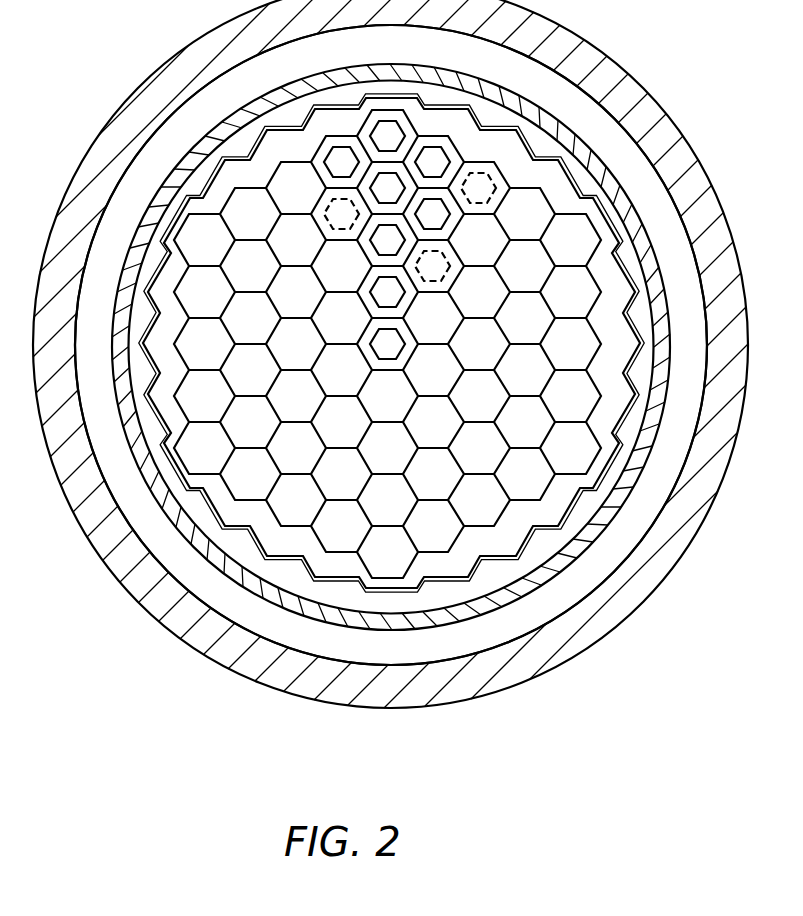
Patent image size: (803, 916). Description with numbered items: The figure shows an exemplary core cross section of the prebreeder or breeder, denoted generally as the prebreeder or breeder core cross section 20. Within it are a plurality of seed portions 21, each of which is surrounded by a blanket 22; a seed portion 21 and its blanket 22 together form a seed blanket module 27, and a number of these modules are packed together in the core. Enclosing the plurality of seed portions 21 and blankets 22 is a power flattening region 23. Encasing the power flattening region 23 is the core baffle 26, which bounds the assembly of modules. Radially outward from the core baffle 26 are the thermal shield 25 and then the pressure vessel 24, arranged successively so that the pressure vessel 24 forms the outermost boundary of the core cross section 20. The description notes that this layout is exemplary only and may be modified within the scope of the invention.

The prebreeder or breeder core cross section 20 is at (390, 354).
The seed portion 21 is at (383, 138).
The blanket 22 is at (413, 130).
The power flattening region 23 is at (460, 150).
The pressure vessel 24 is at (573, 650).
The thermal shield 25 is at (486, 607).
The core baffle 26 is at (420, 592).
The seed blanket module 27 is at (508, 105).